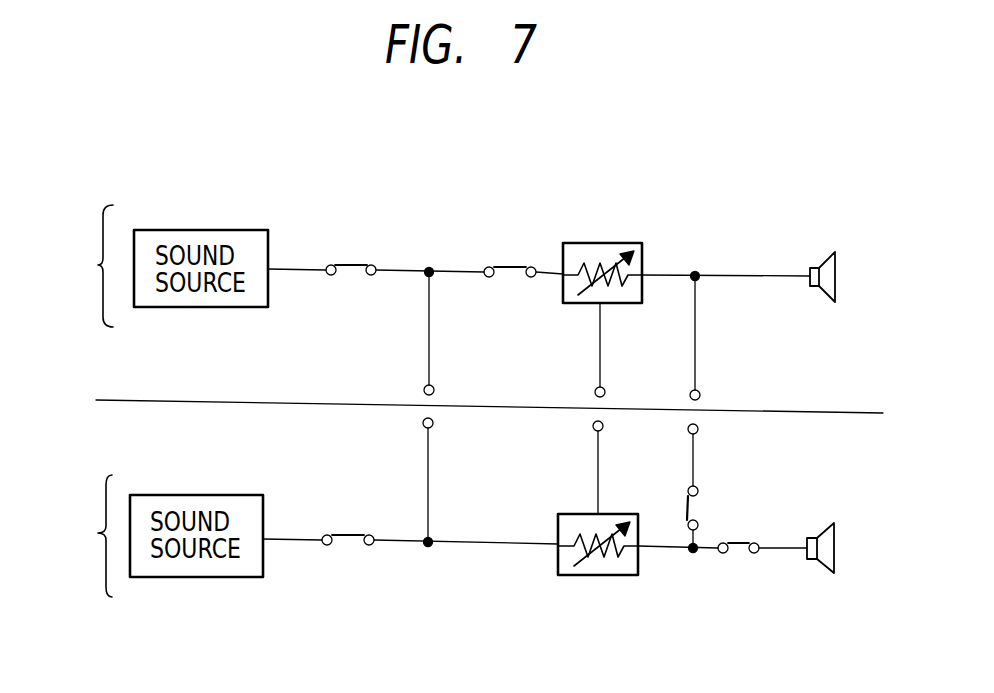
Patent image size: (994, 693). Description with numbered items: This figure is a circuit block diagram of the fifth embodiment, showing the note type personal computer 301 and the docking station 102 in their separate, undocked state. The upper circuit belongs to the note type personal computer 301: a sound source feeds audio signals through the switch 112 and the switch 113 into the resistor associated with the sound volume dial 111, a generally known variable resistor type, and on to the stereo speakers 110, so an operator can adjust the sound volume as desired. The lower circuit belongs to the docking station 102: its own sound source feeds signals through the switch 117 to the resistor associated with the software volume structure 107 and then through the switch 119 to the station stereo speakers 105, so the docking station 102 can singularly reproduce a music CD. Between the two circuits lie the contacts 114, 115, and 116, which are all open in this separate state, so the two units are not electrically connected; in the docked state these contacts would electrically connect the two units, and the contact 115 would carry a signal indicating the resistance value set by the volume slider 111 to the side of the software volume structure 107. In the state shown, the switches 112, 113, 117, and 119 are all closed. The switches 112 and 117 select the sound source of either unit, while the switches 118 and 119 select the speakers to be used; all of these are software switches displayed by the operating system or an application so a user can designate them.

The note type personal computer 301 is at (78, 278).
The docking station 102 is at (72, 549).
The stereo speakers 110 is at (835, 262).
The station stereo speakers 105 is at (835, 560).
The sound volume dial 111 is at (622, 243).
The software volume structure 107 is at (621, 575).
The switch 112 is at (358, 264).
The switch 113 is at (512, 266).
The contact 114 is at (422, 397).
The contact 115 is at (591, 400).
The contact 116 is at (700, 405).
The switch 117 is at (349, 547).
The switch 118 is at (697, 507).
The switch 119 is at (742, 553).